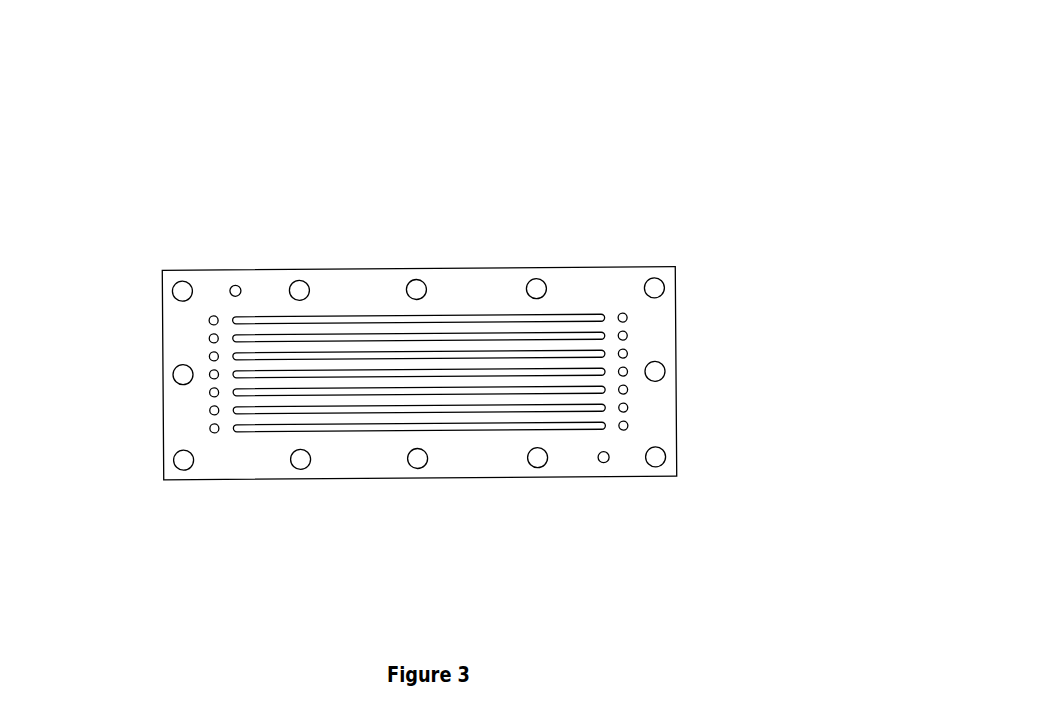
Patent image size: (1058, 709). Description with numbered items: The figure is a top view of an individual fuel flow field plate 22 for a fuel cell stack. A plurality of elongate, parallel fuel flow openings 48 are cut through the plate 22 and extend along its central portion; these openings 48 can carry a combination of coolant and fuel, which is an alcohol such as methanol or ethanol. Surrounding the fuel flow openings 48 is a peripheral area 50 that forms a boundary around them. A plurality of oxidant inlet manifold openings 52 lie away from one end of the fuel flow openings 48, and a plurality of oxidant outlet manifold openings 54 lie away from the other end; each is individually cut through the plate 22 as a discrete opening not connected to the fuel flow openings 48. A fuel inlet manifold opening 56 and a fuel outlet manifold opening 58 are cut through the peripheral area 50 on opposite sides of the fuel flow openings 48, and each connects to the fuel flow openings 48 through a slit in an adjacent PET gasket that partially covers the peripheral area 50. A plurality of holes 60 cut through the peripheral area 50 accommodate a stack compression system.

The fuel flow field plate 22 is at (707, 113).
The elongate fuel flow opening 48 is at (559, 315).
The peripheral area 50 is at (470, 297).
The oxidant inlet manifold opening 52 is at (213, 338).
The oxidant outlet manifold opening 54 is at (626, 336).
The fuel inlet manifold opening 56 is at (234, 290).
The fuel outlet manifold opening 58 is at (605, 459).
The holes 60 is at (302, 290).